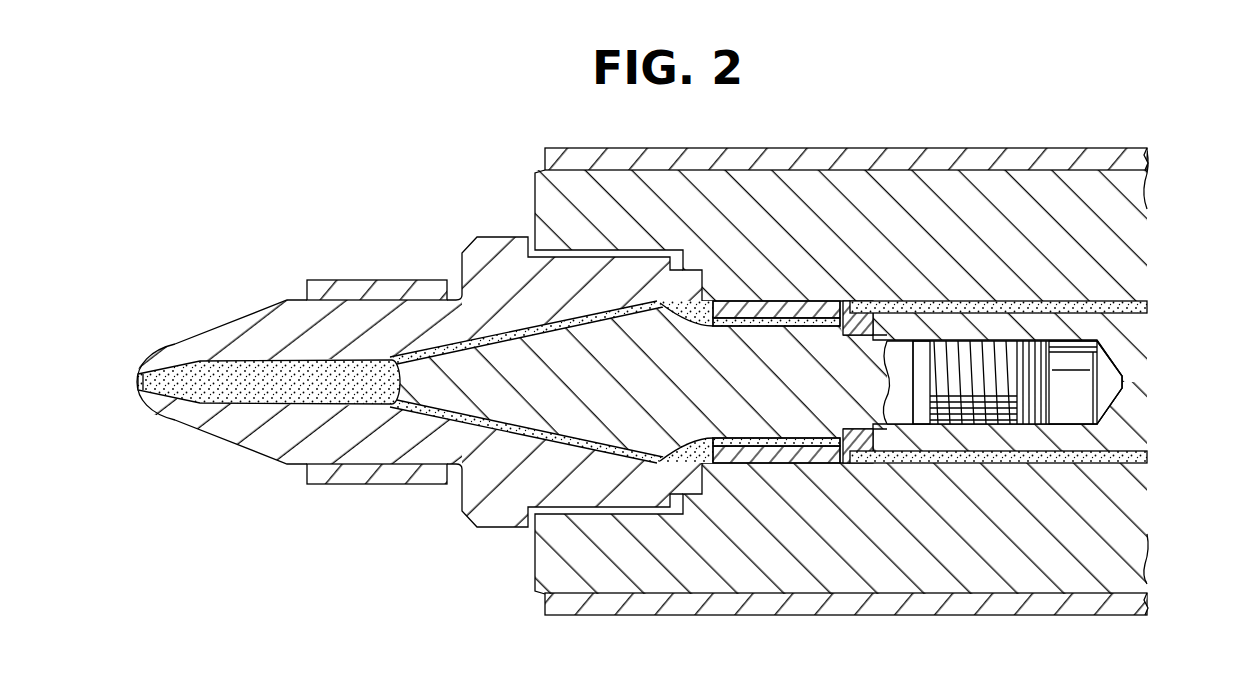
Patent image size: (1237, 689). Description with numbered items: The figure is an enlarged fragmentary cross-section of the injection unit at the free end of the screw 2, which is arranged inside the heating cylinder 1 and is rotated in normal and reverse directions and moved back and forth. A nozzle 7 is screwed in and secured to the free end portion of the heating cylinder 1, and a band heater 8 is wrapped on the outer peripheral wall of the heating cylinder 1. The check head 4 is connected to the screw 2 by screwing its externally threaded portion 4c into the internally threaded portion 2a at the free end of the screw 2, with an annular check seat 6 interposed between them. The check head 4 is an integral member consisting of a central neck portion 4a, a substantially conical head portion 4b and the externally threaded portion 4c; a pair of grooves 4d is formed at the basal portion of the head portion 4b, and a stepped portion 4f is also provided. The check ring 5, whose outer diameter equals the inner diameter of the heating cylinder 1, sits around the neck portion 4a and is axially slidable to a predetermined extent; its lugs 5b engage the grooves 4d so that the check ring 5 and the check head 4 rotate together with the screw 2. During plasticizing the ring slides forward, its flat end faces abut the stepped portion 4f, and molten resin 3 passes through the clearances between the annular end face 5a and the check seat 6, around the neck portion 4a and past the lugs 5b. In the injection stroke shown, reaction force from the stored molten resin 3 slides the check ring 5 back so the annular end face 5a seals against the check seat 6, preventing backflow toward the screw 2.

The heating cylinder 1 is at (1145, 553).
The screw 2 is at (1140, 323).
The internally threaded portion 2a is at (1072, 420).
The molten resin 3 is at (253, 357).
The check head 4 is at (792, 383).
The neck portion 4a is at (803, 350).
The head portion 4b is at (529, 340).
The externally threaded portion 4c is at (969, 352).
The grooves 4d is at (675, 303).
The stepped portion 4f is at (723, 300).
The check ring 5 is at (780, 465).
The annular end face 5a is at (846, 466).
The lugs 5b is at (713, 463).
The check seat 6 is at (872, 461).
The nozzle 7 is at (236, 447).
The band heater 8 is at (910, 148).